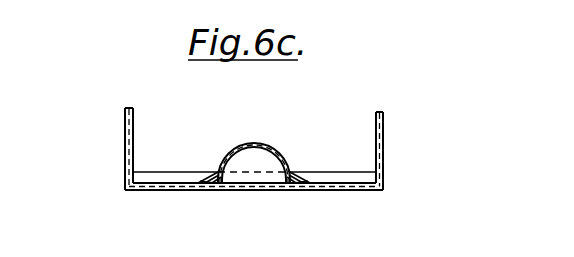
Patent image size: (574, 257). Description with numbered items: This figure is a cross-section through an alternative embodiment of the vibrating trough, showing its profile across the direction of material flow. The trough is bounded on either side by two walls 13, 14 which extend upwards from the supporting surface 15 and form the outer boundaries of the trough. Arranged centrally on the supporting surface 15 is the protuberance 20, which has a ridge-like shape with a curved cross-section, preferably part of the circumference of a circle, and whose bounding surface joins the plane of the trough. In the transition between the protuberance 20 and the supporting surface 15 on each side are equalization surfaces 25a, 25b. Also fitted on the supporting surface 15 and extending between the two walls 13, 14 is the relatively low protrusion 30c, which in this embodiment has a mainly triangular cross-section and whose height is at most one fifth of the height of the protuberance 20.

The wall 13 is at (127, 128).
The wall 14 is at (383, 122).
The supporting surface 15 is at (340, 190).
The protuberance 20 is at (266, 141).
The equalization surface 25a is at (210, 183).
The equalization surface 25b is at (310, 178).
The protrusion 30c is at (365, 178).